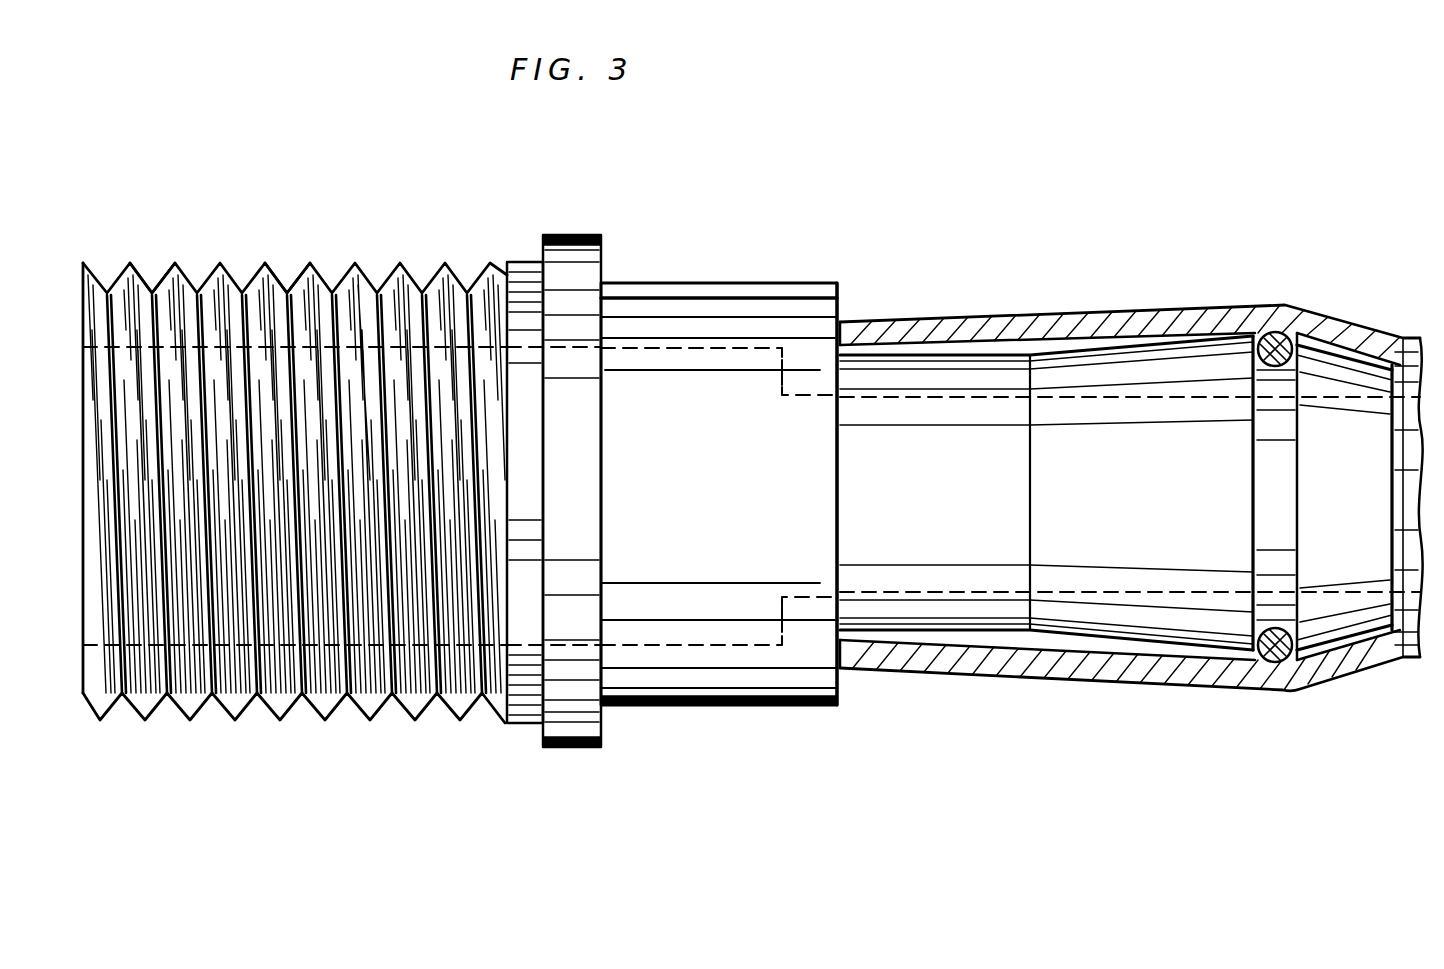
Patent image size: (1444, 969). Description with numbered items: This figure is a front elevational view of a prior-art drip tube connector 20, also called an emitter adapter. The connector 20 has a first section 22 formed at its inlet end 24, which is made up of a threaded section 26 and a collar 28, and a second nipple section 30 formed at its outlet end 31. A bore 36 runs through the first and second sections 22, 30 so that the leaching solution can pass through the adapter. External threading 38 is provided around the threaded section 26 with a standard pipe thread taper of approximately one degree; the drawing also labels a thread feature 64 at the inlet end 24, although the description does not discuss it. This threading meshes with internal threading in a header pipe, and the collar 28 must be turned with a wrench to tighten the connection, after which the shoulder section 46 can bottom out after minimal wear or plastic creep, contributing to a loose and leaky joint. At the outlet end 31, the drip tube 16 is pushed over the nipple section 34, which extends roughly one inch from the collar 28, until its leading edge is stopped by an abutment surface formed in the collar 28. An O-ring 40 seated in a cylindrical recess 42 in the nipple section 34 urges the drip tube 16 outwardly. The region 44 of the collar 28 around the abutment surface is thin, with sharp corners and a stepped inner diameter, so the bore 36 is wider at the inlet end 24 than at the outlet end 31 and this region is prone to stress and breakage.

The drip tube 16 is at (1172, 315).
The drip tube connector 20 is at (583, 196).
The first section 22 is at (383, 228).
The inlet end 24 is at (83, 475).
The threaded section 26 is at (282, 752).
The collar 28 is at (700, 283).
The second nipple section 30 is at (900, 700).
The outlet end 31 is at (1374, 425).
The nipple section 34 is at (1098, 350).
The bore 36 is at (337, 453).
The external threading 38 is at (290, 263).
The O-ring 40 is at (1282, 333).
The cylindrical recess 42 is at (1270, 664).
The region of the collar 44 is at (797, 305).
The shoulder section 46 is at (556, 235).
The first thread 64 is at (157, 262).